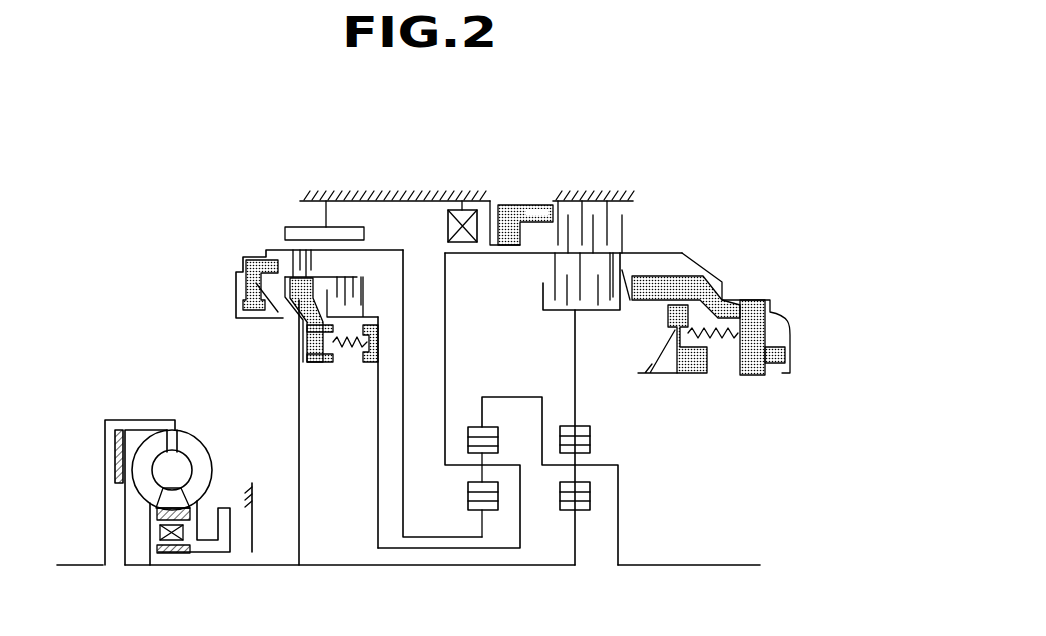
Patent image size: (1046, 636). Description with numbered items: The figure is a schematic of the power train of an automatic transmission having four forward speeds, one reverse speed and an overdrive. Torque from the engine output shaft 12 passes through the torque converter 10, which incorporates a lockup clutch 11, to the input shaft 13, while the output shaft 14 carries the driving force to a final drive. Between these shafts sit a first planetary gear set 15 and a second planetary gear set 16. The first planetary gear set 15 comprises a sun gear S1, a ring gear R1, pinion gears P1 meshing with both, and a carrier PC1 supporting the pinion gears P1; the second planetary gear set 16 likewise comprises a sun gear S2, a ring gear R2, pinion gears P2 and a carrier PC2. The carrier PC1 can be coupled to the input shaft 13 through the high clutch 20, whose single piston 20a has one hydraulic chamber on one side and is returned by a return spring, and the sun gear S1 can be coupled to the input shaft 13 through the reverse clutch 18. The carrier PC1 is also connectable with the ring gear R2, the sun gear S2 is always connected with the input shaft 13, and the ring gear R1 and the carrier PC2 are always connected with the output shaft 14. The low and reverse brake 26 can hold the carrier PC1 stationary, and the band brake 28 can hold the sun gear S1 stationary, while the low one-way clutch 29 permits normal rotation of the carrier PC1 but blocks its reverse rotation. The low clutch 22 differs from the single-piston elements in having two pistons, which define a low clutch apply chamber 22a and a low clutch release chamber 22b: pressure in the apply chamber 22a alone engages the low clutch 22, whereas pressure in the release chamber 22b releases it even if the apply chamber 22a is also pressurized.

The torque converter 10 is at (148, 416).
The lockup clutch 11 is at (115, 445).
The engine output shaft 12 is at (68, 563).
The input shaft 13 is at (260, 566).
The output shaft 14 is at (711, 564).
The first planetary gear set 15 is at (467, 412).
The second planetary gear set 16 is at (596, 412).
The reverse clutch 18 is at (325, 266).
The high clutch 20 is at (368, 284).
The piston of high clutch 20a is at (303, 340).
The low clutch 22 is at (540, 273).
The low clutch apply chamber 22a is at (786, 336).
The low clutch release chamber 22b is at (722, 352).
The low and reverse brake 26 is at (630, 212).
The band brake 28 is at (288, 220).
The low one-way clutch 29 is at (461, 204).
The ring gear R1 is at (490, 432).
The sun gear S1 is at (468, 508).
The pinion gears P1 is at (499, 488).
The carrier PC1 is at (458, 465).
The ring gear R2 is at (572, 425).
The sun gear S2 is at (565, 512).
The pinion gears P2 is at (590, 488).
The carrier PC2 is at (612, 465).